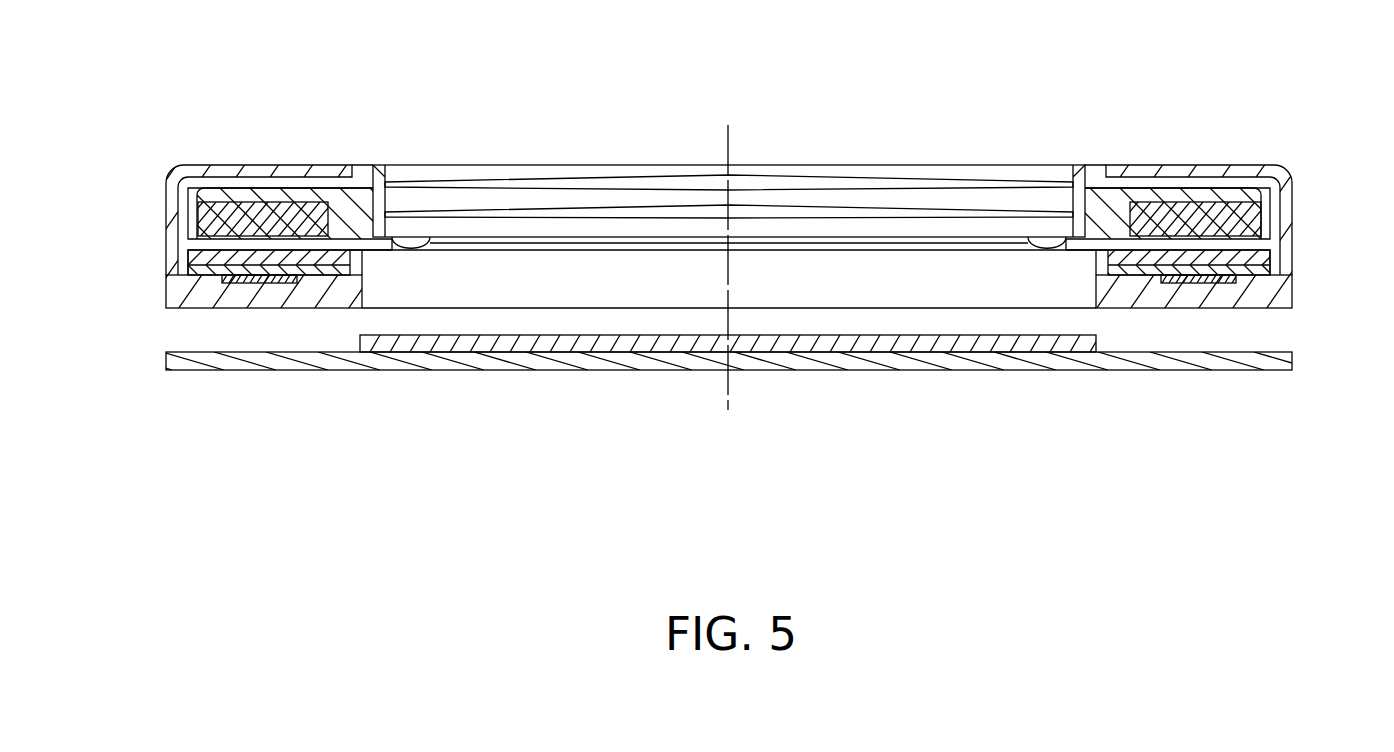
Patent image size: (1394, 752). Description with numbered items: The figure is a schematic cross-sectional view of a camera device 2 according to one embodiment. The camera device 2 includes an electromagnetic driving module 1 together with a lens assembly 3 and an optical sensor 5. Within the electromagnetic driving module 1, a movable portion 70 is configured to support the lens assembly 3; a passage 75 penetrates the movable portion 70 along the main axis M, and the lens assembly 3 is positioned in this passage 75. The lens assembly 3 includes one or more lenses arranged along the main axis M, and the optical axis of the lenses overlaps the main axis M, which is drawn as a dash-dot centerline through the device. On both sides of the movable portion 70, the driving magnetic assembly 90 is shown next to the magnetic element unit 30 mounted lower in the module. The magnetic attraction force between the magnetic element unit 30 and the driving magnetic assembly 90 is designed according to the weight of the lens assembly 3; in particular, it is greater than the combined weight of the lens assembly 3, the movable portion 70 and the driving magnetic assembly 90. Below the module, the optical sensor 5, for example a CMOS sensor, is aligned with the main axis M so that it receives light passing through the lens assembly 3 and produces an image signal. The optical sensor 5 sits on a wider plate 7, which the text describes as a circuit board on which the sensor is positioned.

The camera device 2 is at (142, 100).
The electromagnetic driving module 1 is at (275, 155).
The lens assembly 3 is at (510, 178).
The passage 75 is at (595, 171).
The movable portion 70 is at (1093, 186).
The driving magnetic assembly 90 is at (1263, 218).
The magnetic element unit 30 is at (1242, 278).
The optical sensor 5 is at (512, 343).
The substrate 7 is at (597, 362).
The main axis M is at (727, 251).